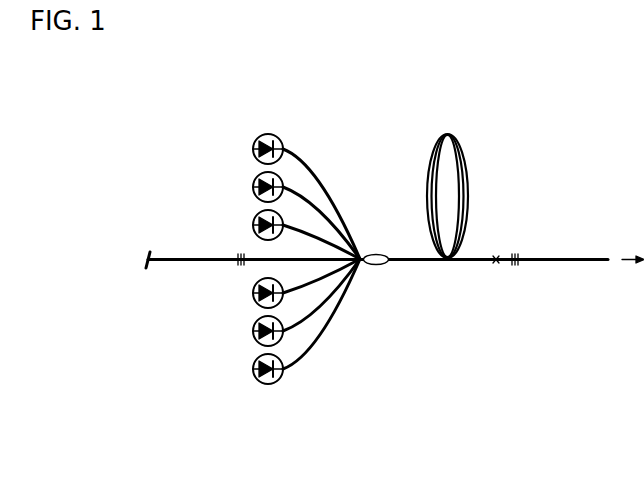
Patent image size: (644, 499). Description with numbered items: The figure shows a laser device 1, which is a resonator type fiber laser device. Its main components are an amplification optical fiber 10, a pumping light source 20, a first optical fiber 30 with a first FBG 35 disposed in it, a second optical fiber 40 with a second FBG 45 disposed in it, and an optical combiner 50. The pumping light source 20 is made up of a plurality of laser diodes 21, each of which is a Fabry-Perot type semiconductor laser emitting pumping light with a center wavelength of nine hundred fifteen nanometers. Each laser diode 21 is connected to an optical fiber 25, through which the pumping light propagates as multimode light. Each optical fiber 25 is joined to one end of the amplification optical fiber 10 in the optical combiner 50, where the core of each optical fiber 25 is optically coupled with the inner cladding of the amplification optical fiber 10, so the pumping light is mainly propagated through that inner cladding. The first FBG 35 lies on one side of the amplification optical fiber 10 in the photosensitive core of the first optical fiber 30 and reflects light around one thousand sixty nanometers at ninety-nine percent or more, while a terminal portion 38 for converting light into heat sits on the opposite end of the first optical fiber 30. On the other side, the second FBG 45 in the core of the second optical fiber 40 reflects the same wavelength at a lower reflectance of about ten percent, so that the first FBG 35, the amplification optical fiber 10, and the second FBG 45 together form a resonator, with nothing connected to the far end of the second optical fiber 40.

The laser device 1 is at (599, 116).
The amplification optical fiber 10 is at (465, 258).
The pumping light source 20 is at (248, 115).
The laser diode 21 is at (255, 144).
The optical fiber 25 is at (305, 232).
The first optical fiber 30 is at (180, 258).
The first FBG 35 is at (240, 266).
The terminal portion 38 is at (146, 258).
The second optical fiber 40 is at (572, 258).
The second FBG 45 is at (515, 265).
The optical combiner 50 is at (381, 264).